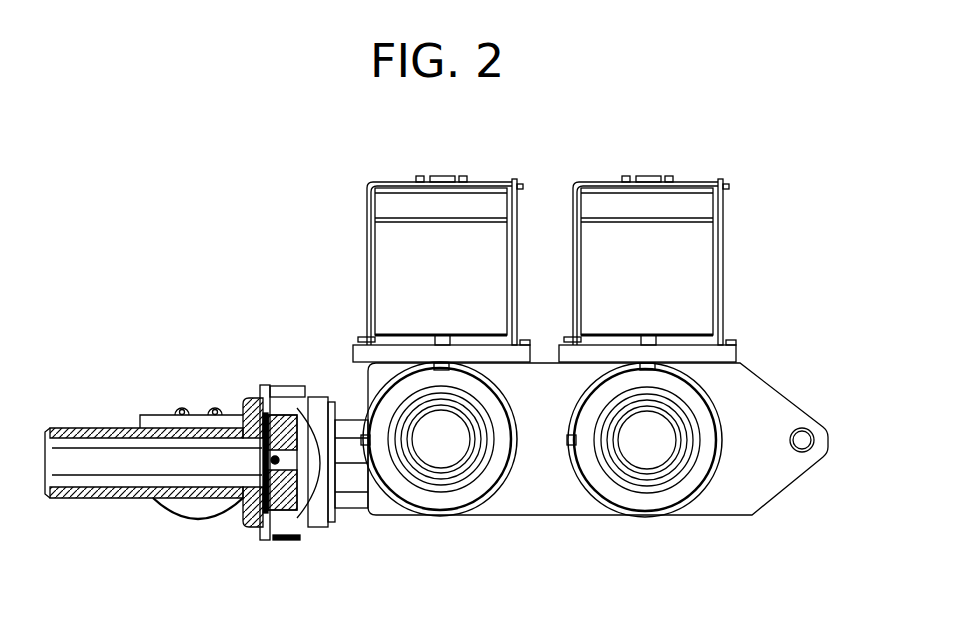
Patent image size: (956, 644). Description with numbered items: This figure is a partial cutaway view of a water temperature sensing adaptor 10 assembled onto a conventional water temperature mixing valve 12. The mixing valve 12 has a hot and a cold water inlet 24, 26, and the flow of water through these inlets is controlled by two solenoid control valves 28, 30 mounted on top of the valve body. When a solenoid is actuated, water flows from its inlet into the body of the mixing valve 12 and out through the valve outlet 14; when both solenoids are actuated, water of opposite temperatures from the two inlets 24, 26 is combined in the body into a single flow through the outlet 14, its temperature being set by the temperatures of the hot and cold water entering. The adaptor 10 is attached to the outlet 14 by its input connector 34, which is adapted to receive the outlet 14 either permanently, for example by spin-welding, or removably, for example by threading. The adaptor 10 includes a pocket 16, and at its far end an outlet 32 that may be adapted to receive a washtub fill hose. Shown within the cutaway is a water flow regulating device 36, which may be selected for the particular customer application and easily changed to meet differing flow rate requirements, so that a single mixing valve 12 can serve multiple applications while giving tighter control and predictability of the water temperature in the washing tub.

The water temperature sensing adaptor 10 is at (129, 426).
The water temperature mixing valve 12 is at (782, 397).
The outlet 14 is at (318, 518).
The pocket 16 is at (200, 412).
The hot water inlet 24 is at (443, 500).
The cold water inlet 26 is at (648, 500).
The solenoid control valve 28 is at (485, 181).
The solenoid control valve 30 is at (706, 181).
The outlet 32 is at (58, 426).
The input connector 34 is at (293, 392).
The water flow regulating device 36 is at (288, 520).